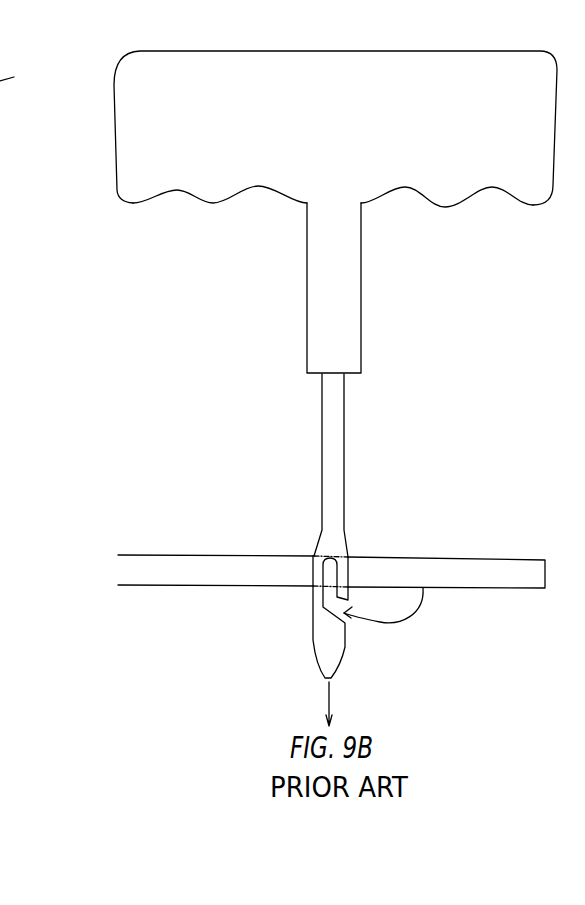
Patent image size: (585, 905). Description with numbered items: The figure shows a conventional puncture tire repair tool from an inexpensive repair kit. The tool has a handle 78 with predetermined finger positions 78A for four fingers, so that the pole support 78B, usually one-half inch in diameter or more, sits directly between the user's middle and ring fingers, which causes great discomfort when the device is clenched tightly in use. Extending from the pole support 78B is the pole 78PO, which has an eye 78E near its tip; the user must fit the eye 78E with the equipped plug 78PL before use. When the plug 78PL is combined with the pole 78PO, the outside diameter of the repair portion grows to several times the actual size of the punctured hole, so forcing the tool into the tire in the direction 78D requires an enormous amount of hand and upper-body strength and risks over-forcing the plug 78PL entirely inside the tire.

The handle 78 is at (113, 130).
The finger positions 78A is at (258, 188).
The pole support 78B is at (307, 273).
The pole 78PO is at (344, 485).
The plug 78PL is at (245, 557).
The eye 78E is at (333, 567).
The direction of insertion 78D is at (347, 704).